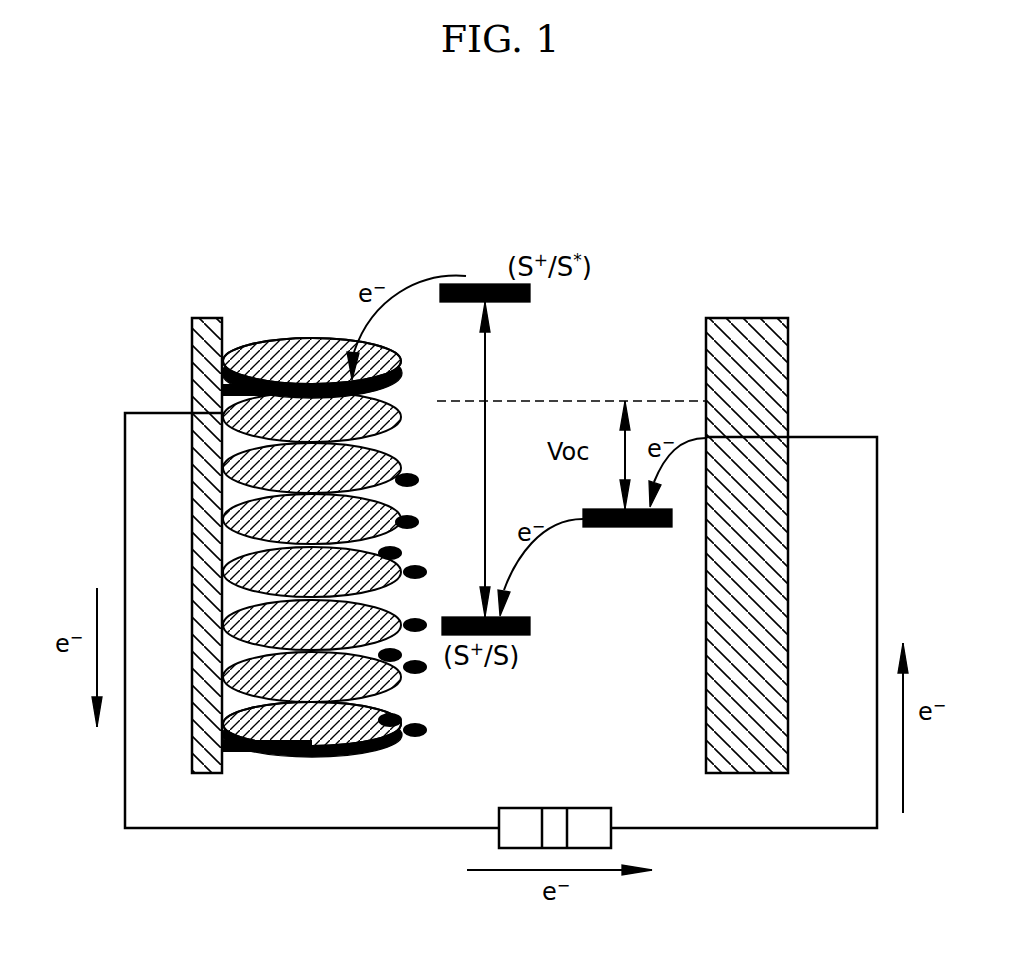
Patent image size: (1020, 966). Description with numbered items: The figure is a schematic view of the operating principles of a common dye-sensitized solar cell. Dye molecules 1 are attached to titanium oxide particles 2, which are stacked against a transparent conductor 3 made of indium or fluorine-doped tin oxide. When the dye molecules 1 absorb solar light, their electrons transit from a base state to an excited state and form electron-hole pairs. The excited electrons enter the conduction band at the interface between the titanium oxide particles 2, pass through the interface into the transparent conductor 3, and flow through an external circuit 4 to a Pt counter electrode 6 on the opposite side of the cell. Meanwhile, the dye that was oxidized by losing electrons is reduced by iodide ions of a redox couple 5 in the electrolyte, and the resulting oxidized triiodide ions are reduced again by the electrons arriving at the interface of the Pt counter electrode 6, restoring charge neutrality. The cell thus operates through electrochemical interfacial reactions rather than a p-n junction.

The dye molecules 1 is at (418, 740).
The titanium oxide particles 2 is at (298, 755).
The transparent conductor 3 is at (207, 490).
The external circuit 4 is at (693, 830).
The redox couple 5 is at (635, 577).
The Pt counter electrode 6 is at (772, 609).